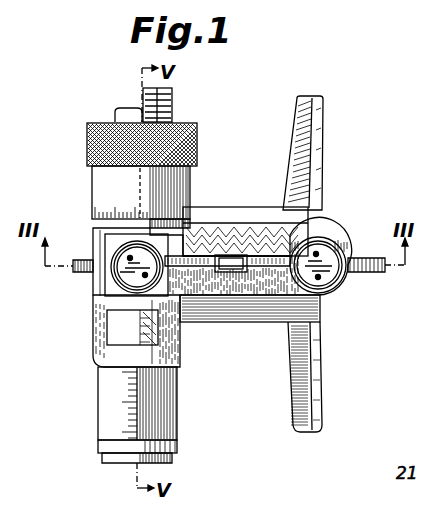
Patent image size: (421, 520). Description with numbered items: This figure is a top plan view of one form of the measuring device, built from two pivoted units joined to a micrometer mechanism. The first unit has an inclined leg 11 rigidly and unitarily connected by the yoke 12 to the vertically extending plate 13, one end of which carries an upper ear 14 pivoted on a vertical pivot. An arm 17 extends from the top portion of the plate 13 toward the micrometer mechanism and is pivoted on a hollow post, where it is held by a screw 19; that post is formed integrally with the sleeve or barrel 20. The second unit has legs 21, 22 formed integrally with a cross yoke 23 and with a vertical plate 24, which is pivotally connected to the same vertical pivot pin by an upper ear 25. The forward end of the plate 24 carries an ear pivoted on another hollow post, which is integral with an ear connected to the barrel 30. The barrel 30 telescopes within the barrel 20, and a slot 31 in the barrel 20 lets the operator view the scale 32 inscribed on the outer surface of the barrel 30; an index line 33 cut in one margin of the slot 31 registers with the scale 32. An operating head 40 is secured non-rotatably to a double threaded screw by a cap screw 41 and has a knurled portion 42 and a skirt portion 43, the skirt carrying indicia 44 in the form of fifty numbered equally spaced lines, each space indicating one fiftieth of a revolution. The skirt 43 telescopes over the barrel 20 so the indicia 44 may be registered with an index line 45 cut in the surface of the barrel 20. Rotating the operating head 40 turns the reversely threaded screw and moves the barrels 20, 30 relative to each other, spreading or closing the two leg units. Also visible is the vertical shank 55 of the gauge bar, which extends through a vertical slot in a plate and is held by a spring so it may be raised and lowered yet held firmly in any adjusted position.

The inclined leg 11 is at (322, 394).
The yoke 12 is at (237, 322).
The vertically extending plate 13 is at (231, 296).
The upper ear 14 is at (338, 288).
The arm 17 is at (178, 298).
The screw 19 is at (125, 263).
The sleeve or barrel 20 is at (92, 303).
The leg 21 is at (173, 100).
The leg 22 is at (320, 108).
The cross yoke 23 is at (245, 222).
The vertical plate 24 is at (210, 245).
The upper ear 25 is at (320, 238).
The barrel 30 is at (96, 424).
The slot 31 is at (107, 328).
The scale 32 is at (98, 398).
The index line 33 is at (140, 320).
The operating head 40 is at (115, 123).
The cap screw 41 is at (128, 108).
The knurled portion 42 is at (197, 134).
The skirt portion 43 is at (95, 215).
The indicia 44 is at (105, 205).
The index line 45 is at (95, 232).
The vertical shank 55 is at (238, 272).